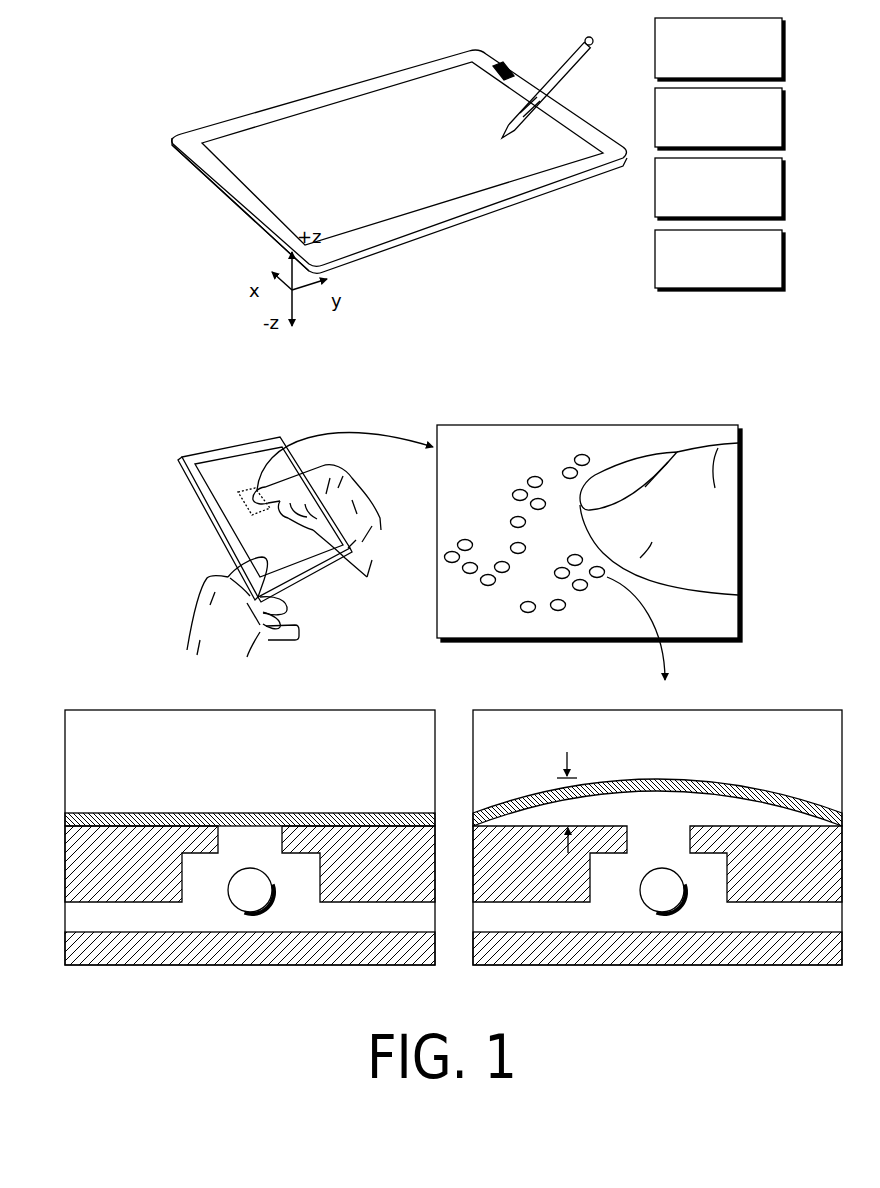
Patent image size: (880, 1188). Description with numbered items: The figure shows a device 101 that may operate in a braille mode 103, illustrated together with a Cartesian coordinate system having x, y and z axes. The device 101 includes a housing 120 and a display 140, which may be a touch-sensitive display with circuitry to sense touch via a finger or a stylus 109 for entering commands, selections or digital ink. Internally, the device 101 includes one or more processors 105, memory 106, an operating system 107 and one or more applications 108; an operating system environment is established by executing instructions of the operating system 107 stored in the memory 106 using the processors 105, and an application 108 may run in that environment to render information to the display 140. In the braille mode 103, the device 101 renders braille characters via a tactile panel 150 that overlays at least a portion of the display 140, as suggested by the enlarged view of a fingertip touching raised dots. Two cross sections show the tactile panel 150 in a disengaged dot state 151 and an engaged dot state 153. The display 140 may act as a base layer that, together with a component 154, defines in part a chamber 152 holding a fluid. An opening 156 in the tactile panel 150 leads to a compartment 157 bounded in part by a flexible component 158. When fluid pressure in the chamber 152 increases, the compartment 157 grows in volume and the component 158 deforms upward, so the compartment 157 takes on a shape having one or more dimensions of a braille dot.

The device 101 is at (199, 66).
The display 140 is at (385, 110).
The stylus 109 is at (568, 75).
The housing 120 is at (475, 212).
The processors 105 is at (703, 68).
The memory 106 is at (703, 137).
The operating system 107 is at (703, 207).
The applications 108 is at (703, 278).
The braille mode 103 is at (528, 383).
The tactile panel 150 is at (143, 755).
The disengaged dot state 151 is at (422, 735).
The engaged dot state 153 is at (827, 740).
The component 158 is at (113, 813).
The compartment 157 is at (673, 815).
The component 154 is at (133, 893).
The opening 156 is at (219, 828).
The chamber 152 is at (170, 925).